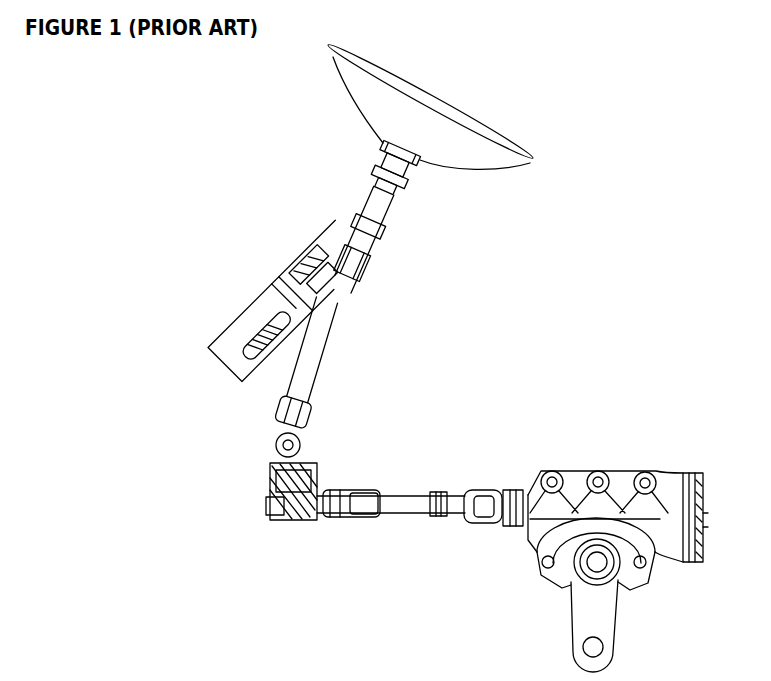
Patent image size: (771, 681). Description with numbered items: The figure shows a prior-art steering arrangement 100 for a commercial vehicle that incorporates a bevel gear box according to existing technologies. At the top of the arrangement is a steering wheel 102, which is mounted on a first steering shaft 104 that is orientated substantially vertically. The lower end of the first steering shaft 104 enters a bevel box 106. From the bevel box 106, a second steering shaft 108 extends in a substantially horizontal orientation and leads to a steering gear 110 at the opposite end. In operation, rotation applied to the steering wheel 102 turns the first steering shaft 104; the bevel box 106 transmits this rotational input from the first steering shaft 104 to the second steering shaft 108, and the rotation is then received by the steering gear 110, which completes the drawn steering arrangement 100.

The steering arrangement 100 is at (205, 227).
The steering wheel 102 is at (550, 167).
The first steering shaft 104 is at (326, 382).
The bevel box 106 is at (312, 496).
The second steering shaft 108 is at (457, 498).
The steering gear 110 is at (626, 485).